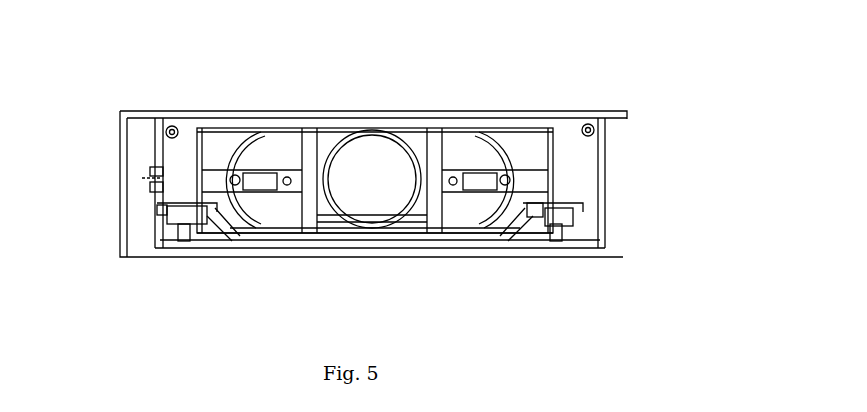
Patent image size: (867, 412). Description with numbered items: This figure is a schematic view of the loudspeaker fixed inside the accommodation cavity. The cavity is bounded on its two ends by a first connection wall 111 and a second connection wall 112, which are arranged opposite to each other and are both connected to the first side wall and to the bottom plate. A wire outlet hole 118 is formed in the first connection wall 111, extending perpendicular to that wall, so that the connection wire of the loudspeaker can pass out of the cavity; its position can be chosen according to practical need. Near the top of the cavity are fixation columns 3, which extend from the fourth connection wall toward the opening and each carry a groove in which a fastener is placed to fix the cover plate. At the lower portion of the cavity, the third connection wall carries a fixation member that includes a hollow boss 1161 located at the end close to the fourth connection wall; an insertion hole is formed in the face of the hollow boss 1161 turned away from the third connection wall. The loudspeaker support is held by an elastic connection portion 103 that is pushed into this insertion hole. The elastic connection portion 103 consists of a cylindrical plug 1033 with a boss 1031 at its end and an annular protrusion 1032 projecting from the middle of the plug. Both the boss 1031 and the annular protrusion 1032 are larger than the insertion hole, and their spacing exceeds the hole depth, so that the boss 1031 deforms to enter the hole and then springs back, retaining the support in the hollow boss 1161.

The fixation column 3 is at (179, 107).
The second connection wall 112 is at (610, 150).
The wire outlet hole 118 is at (142, 167).
The first connection wall 111 is at (149, 220).
The elastic connection portion 103 is at (643, 243).
The cylindrical plug 1033 is at (585, 210).
The annular protrusion 1032 is at (589, 227).
The boss 1031 is at (579, 248).
The hollow boss 1161 is at (511, 247).